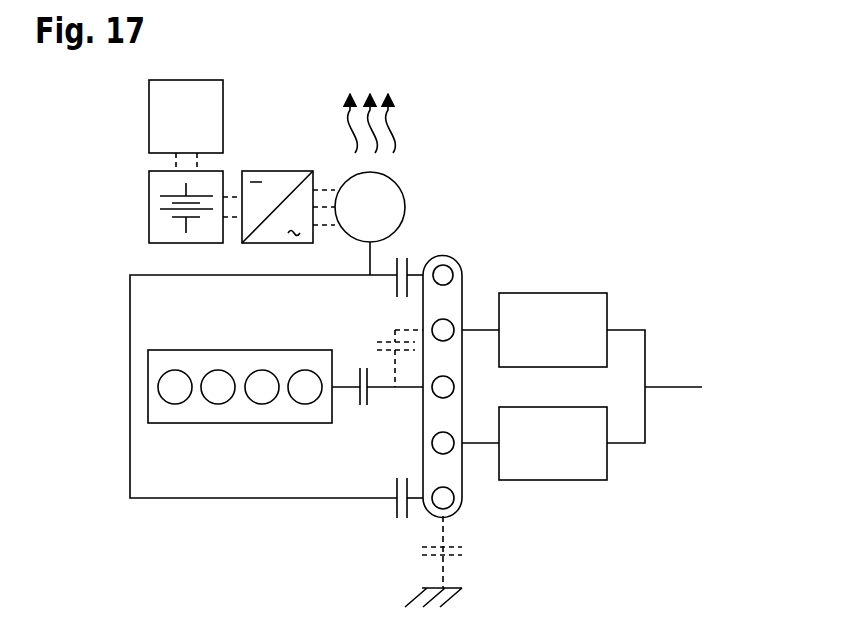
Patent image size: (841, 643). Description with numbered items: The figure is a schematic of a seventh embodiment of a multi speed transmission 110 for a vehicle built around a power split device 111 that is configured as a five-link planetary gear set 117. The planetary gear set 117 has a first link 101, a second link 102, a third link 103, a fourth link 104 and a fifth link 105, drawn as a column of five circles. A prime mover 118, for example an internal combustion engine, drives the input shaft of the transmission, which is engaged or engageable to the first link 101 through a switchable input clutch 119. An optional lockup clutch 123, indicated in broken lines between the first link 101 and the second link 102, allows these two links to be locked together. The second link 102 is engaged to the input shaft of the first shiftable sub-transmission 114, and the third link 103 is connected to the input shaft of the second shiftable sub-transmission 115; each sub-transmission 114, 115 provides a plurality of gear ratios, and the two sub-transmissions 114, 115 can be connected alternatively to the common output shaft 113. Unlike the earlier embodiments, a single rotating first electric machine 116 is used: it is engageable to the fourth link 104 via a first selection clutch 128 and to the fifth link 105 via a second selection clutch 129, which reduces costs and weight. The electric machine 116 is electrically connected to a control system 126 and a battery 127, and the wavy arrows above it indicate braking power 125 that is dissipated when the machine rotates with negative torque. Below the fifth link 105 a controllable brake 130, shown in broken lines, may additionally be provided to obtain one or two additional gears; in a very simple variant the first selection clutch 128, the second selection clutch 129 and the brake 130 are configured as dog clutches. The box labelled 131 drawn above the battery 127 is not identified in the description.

The first link 101 is at (445, 387).
The second link 102 is at (445, 330).
The third link 103 is at (442, 444).
The fourth link 104 is at (443, 275).
The fifth link 105 is at (445, 498).
The multi speed transmission 110 is at (603, 243).
The power split device 111 is at (443, 252).
The output shaft 113 is at (672, 387).
The first shiftable sub-transmission 114 is at (553, 330).
The second shiftable sub-transmission 115 is at (553, 443).
The first electric machine 116 is at (370, 207).
The five-link planetary gear set 117 is at (465, 274).
The prime mover 118 is at (163, 360).
The switchable input clutch 119 is at (357, 402).
The lockup clutch 123 is at (384, 340).
The braking power 125 is at (348, 124).
The control system 126 is at (250, 171).
The battery 127 is at (149, 188).
The first selection clutch 128 is at (397, 283).
The second selection clutch 129 is at (397, 505).
The controllable brake 130 is at (455, 555).
The control unit 131 is at (186, 116).